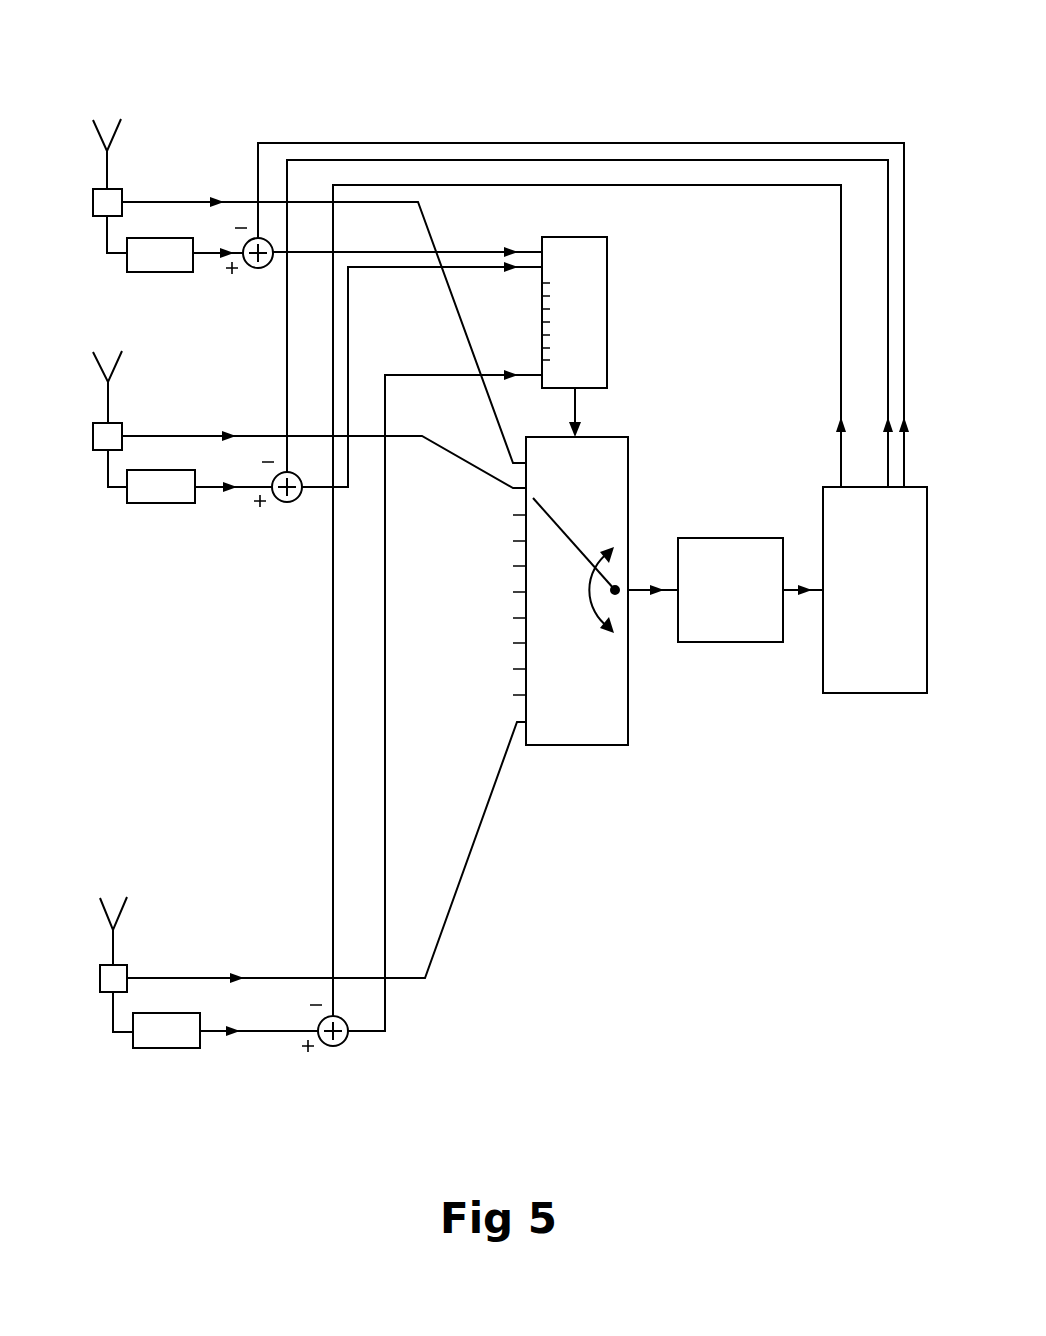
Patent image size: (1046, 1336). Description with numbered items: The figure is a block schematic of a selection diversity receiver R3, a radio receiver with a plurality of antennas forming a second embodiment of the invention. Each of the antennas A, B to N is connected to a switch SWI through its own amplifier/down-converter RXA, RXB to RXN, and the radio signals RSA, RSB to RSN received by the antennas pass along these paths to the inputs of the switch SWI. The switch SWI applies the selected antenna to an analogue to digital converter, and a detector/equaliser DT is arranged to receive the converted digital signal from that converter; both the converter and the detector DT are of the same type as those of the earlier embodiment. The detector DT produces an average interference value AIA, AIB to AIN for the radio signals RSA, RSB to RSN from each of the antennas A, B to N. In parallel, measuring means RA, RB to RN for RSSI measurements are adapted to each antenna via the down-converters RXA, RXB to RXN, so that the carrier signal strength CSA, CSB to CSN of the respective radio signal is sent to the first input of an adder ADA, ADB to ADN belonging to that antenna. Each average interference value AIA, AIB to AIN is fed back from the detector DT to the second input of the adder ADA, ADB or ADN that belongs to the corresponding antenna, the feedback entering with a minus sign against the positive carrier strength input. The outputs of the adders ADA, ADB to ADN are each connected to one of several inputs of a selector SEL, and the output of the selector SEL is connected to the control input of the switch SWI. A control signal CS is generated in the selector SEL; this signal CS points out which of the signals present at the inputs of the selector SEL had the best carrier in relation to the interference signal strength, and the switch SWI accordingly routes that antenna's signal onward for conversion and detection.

The selection diversity receiver R3 is at (640, 116).
The antenna A is at (101, 133).
The antenna B is at (103, 363).
The antenna N is at (110, 912).
The amplifier/down-converter RXA is at (103, 202).
The amplifier/down-converter RXB is at (100, 438).
The amplifier/down-converter RXN is at (104, 980).
The radio signal RSA is at (217, 197).
The radio signal RSB is at (232, 428).
The radio signal RSN is at (237, 970).
The measuring means RA is at (160, 255).
The measuring means RB is at (161, 486).
The measuring means RN is at (166, 1030).
The carrier signal strength CSA is at (222, 258).
The carrier signal strength CSB is at (233, 493).
The carrier signal strength CSN is at (240, 1037).
The adder ADA is at (270, 270).
The adder ADB is at (298, 502).
The adder ADN is at (347, 1047).
The average interference value AIA is at (903, 273).
The average interference value AIB is at (888, 320).
The average interference value AIN is at (841, 402).
The selector SEL is at (608, 307).
The control signal CS is at (577, 402).
The switch SWI is at (630, 532).
The detector/equaliser DT is at (918, 693).